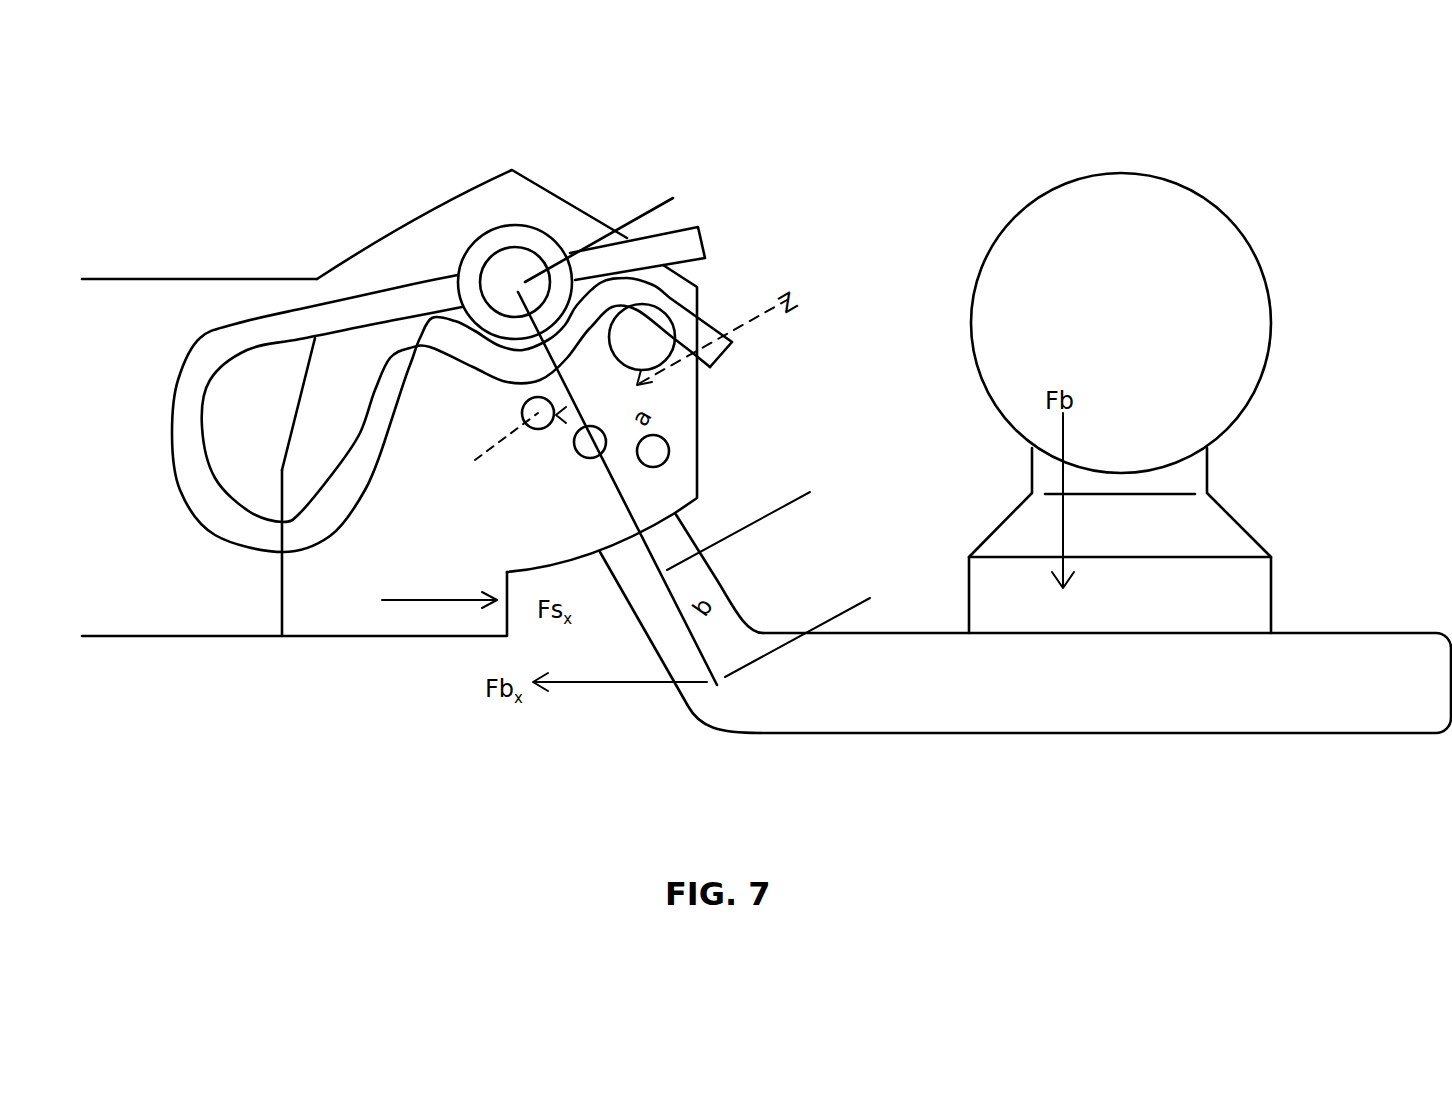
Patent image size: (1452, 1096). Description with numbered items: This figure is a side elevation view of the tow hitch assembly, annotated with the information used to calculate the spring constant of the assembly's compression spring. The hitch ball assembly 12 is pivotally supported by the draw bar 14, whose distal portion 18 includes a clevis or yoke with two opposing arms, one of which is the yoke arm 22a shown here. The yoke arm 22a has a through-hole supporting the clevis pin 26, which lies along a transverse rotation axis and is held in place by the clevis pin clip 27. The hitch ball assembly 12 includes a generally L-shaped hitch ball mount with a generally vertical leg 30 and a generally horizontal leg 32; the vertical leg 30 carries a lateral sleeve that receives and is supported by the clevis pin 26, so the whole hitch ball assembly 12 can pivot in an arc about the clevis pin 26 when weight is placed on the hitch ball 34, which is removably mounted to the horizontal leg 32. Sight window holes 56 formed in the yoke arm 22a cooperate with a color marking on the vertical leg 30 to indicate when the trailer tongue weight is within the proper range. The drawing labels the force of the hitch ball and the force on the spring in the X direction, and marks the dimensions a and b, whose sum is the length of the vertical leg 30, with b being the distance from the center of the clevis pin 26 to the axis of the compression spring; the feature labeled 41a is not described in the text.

The hitch ball assembly 12 is at (905, 585).
The draw bar 14 is at (294, 457).
The distal portion 18 is at (605, 197).
The yoke arm 22a is at (458, 210).
The clevis pin 26 is at (520, 278).
The clevis pin clip 27 is at (285, 332).
The vertical leg 30 is at (680, 642).
The horizontal leg 32 is at (1105, 590).
The hitch ball 34 is at (1121, 323).
The lug 41a is at (640, 335).
The sight window holes 56 is at (653, 451).